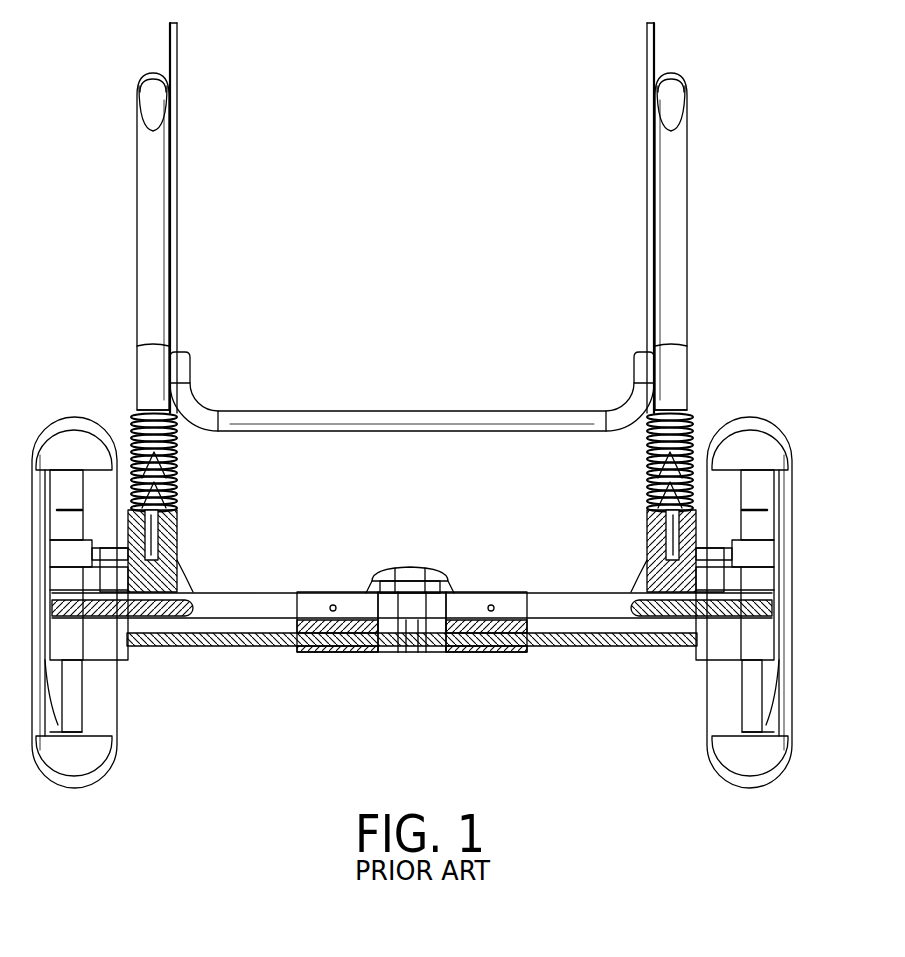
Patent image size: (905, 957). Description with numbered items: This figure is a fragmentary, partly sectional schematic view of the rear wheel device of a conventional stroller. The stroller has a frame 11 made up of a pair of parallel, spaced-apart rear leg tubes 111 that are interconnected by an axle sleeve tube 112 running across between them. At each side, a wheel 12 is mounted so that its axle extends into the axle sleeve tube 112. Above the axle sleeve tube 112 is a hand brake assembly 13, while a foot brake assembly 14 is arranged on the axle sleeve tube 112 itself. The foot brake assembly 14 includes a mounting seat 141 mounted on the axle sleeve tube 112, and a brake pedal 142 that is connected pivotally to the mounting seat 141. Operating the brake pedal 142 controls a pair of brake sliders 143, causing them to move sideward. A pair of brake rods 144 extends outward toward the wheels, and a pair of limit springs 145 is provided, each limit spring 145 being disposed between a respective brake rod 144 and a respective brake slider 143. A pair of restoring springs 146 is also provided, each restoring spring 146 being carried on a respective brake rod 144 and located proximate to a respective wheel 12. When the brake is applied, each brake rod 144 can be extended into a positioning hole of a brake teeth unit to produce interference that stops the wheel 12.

The frame 11 is at (413, 227).
The rear leg tubes 111 is at (146, 279).
The axle sleeve tube 112 is at (558, 608).
The wheels 12 is at (796, 530).
The hand brake assembly 13 is at (633, 340).
The foot brake assembly 14 is at (446, 535).
The mounting seat 141 is at (427, 590).
The brake pedal 142 is at (437, 573).
The brake sliders 143 is at (438, 650).
The brake rods 144 is at (242, 647).
The limit springs 145 is at (357, 650).
The restoring springs 146 is at (155, 636).